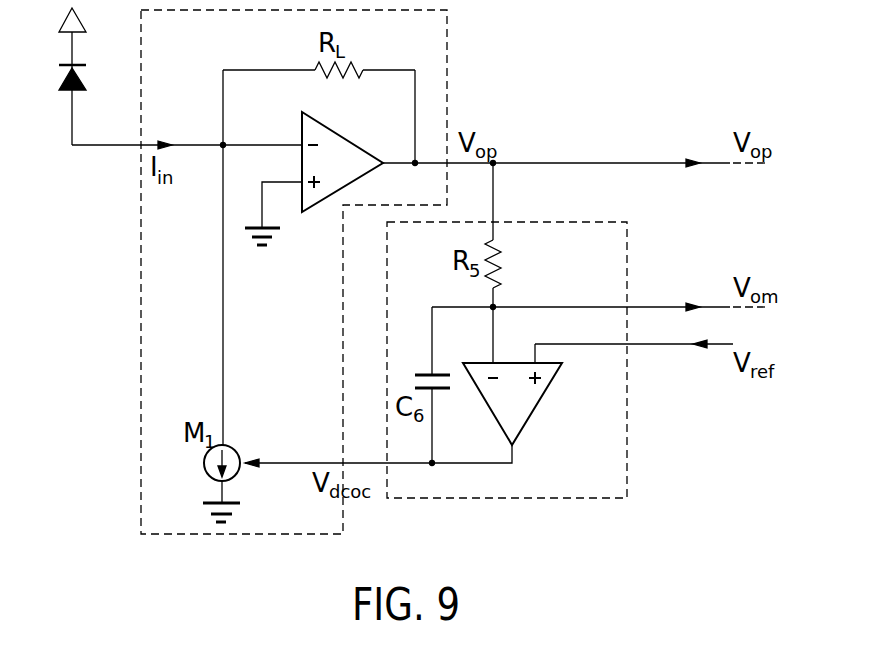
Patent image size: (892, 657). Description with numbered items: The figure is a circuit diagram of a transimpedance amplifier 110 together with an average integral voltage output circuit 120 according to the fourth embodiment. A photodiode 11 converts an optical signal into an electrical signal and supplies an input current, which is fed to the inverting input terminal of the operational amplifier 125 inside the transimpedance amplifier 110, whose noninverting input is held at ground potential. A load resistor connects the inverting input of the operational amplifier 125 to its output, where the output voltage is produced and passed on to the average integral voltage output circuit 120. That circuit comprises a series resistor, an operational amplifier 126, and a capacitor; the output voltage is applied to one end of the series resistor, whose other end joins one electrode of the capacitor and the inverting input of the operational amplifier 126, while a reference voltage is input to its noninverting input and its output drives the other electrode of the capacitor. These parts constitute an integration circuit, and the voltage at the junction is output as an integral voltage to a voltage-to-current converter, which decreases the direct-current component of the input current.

The photodiode 11 is at (80, 86).
The transimpedance amplifier 110 is at (447, 63).
The average integral voltage output circuit 120 is at (627, 450).
The operational amplifier 125 is at (366, 127).
The operational amplifier 126 is at (546, 390).